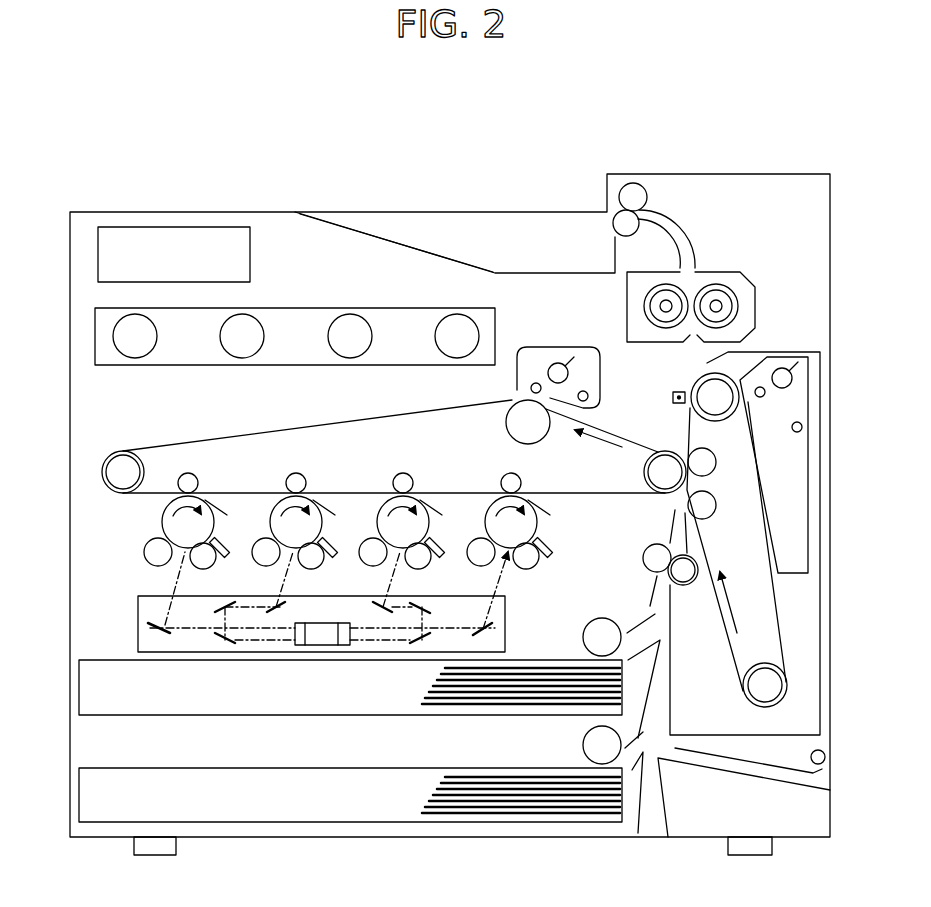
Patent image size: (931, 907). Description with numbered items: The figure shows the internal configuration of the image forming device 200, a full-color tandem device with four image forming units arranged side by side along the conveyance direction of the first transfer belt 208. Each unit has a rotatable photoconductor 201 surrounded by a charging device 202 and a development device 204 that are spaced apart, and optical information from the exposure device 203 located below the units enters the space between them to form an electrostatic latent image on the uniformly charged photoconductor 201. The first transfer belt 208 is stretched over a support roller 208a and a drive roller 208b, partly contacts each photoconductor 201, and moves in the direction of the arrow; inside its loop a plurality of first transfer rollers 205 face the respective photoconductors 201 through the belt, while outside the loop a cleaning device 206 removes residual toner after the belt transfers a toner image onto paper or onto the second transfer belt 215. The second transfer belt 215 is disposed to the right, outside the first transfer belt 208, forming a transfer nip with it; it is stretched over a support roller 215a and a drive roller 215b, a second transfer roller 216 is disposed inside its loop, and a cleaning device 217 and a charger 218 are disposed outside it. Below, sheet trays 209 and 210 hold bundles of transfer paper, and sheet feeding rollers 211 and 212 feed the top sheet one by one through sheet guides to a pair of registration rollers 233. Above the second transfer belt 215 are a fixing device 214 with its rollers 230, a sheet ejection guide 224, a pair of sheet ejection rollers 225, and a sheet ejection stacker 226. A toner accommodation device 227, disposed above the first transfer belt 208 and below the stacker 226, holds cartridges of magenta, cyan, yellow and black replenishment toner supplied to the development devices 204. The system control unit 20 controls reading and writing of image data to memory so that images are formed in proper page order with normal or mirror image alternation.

The image forming device 200 is at (390, 161).
The system control unit 20 is at (251, 255).
The sheet ejection stacker 226 is at (440, 258).
The toner accommodation device 227 is at (400, 307).
The pair of sheet ejection rollers 225 is at (607, 205).
The sheet ejection guide 224 is at (672, 236).
The fixing device 214 is at (718, 272).
The fixing rollers 230 is at (741, 305).
The cleaning device 206 is at (563, 347).
The charger 218 is at (672, 400).
The cleaning device 217 is at (782, 400).
The second transfer belt 215 is at (726, 640).
The support roller 215a is at (700, 385).
The drive roller 215b is at (752, 693).
The second transfer roller 216 is at (712, 470).
The pair of registration rollers 233 is at (643, 556).
The first transfer belt 208 is at (455, 492).
The support roller 208a is at (125, 455).
The drive roller 208b is at (645, 472).
The first transfer rollers 205 is at (196, 475).
The photoconductor 201 is at (162, 527).
The development device 204 is at (322, 567).
The charging device 202 is at (206, 566).
The exposure device 203 is at (137, 622).
The sheet feeding roller 211 is at (583, 637).
The sheet feeding roller 212 is at (583, 745).
The sheet tray 209 is at (337, 716).
The sheet tray 210 is at (337, 824).